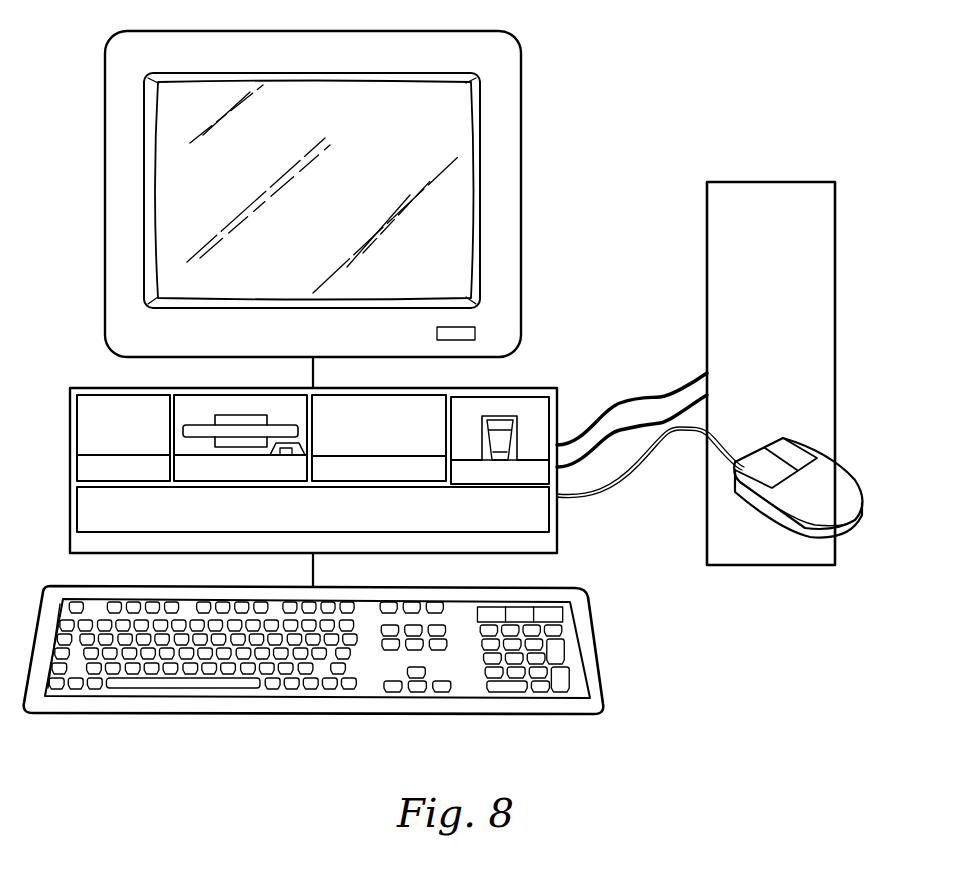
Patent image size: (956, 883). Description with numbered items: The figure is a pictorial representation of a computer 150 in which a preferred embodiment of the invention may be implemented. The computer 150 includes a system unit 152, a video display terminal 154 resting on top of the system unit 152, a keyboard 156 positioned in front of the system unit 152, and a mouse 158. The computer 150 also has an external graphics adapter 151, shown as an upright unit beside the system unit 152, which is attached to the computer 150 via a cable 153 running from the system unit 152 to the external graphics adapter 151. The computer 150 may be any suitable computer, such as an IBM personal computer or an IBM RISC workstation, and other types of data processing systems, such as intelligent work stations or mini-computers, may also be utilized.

The computer 150 is at (538, 357).
The external graphics adapter 151 is at (778, 182).
The system unit 152 is at (563, 398).
The cable 153 is at (694, 374).
The video display terminal 154 is at (523, 138).
The keyboard 156 is at (587, 603).
The mouse 158 is at (772, 438).